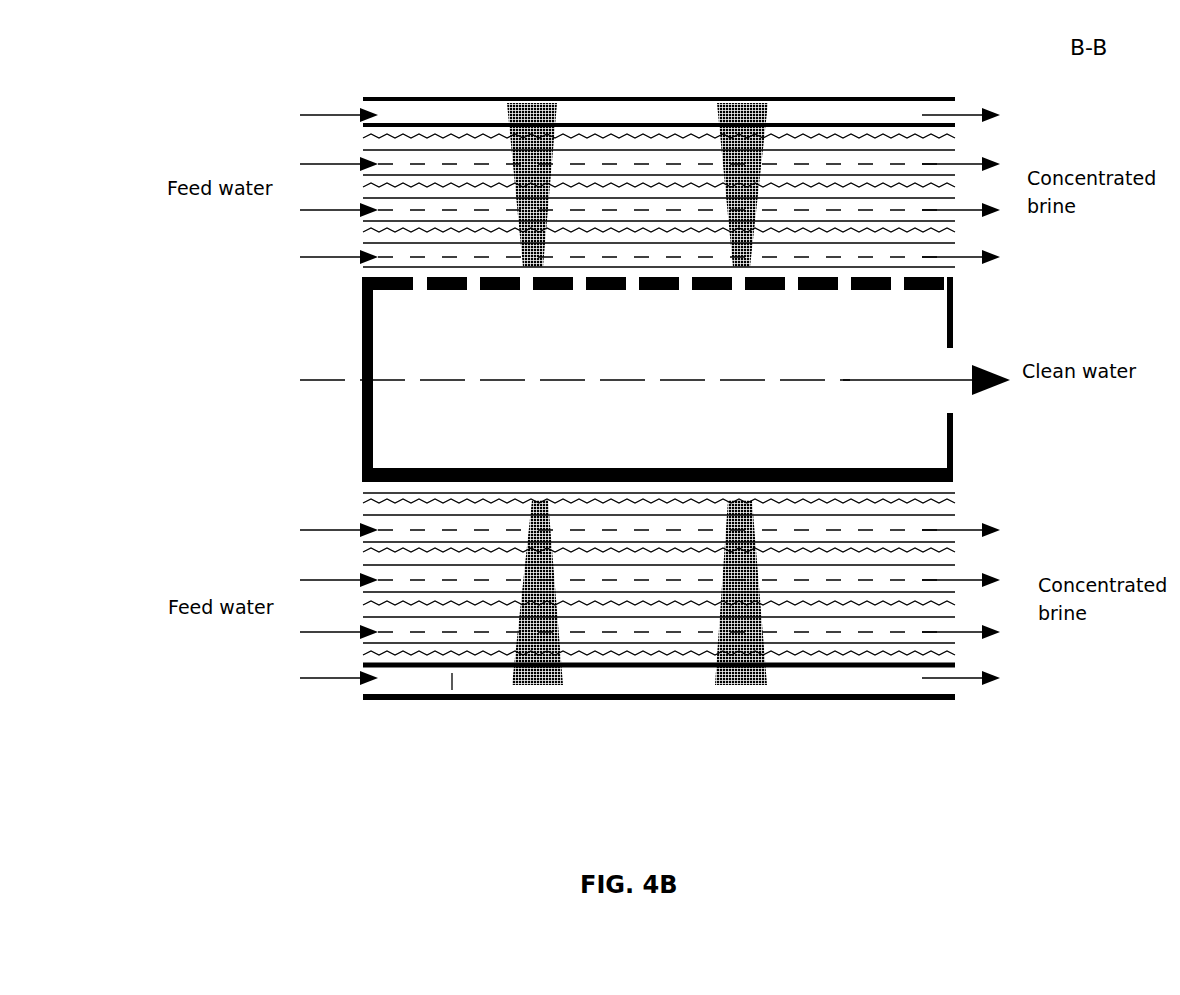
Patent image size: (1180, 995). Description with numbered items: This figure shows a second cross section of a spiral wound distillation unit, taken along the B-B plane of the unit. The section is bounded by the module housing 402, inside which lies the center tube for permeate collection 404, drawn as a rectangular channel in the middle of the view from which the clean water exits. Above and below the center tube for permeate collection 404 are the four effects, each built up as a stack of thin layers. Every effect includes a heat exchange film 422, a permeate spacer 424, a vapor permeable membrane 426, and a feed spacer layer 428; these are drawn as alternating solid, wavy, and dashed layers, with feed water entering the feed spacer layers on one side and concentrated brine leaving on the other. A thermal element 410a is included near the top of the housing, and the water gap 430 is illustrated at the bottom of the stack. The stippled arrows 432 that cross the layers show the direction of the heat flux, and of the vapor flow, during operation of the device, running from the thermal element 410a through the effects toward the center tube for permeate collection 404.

The module housing 402 is at (620, 97).
The center tube for permeate collection 404 is at (362, 308).
The thermal element 410a is at (833, 120).
The heat exchange film 422 is at (375, 493).
The permeate spacer 424 is at (380, 504).
The vapor permeable membrane 426 is at (380, 515).
The feed spacer layer 428 is at (380, 530).
The water gap 430 is at (452, 673).
The arrows 432 is at (510, 98).